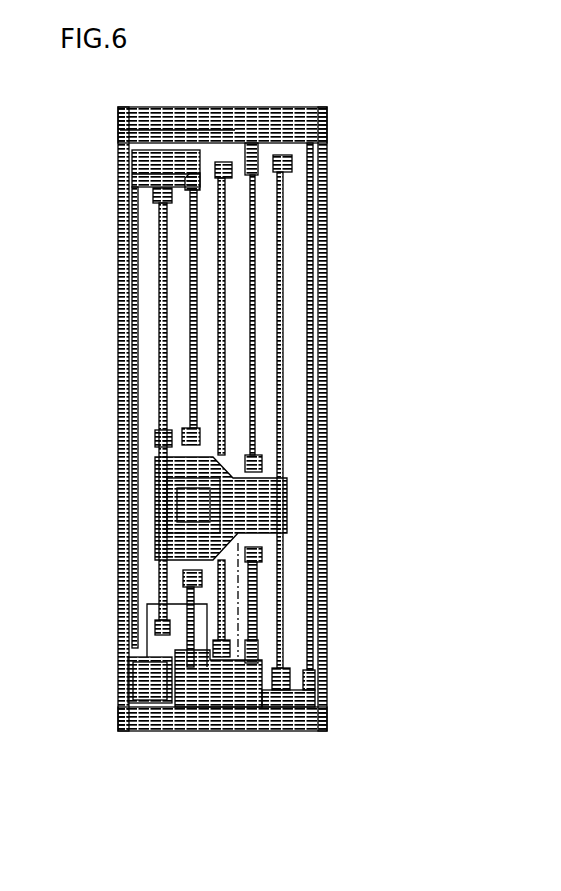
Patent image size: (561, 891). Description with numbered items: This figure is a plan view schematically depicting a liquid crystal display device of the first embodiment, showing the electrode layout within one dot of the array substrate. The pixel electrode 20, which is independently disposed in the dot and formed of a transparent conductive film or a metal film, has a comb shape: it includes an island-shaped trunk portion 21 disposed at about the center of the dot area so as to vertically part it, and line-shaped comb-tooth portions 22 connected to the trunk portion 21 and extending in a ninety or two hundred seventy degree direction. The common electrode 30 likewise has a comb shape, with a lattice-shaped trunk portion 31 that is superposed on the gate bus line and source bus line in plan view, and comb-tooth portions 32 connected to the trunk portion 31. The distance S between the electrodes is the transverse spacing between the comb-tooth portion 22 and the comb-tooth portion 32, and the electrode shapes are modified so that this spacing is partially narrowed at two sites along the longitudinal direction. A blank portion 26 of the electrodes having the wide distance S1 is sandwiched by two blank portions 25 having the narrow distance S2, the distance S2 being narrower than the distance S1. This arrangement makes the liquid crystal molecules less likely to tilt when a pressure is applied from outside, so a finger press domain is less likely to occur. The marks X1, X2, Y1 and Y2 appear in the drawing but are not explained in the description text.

The pixel electrode 20 is at (293, 422).
The trunk portion 21 is at (287, 497).
The comb-tooth portions 22 is at (282, 427).
The blank portions 25 is at (168, 196).
The blank portion 26 is at (166, 290).
The common electrode 30 is at (338, 416).
The trunk portion 31 is at (313, 327).
The comb-tooth portions 32 is at (258, 300).
The distance between the electrodes S is at (256, 202).
The distance between the electrodes at the first portion S1 is at (218, 256).
The distance between the electrodes at the second and third portions S2 is at (215, 171).
The terminal X1 is at (148, 731).
The terminal X2 is at (207, 731).
The terminal Y1 is at (287, 537).
The terminal Y2 is at (238, 658).